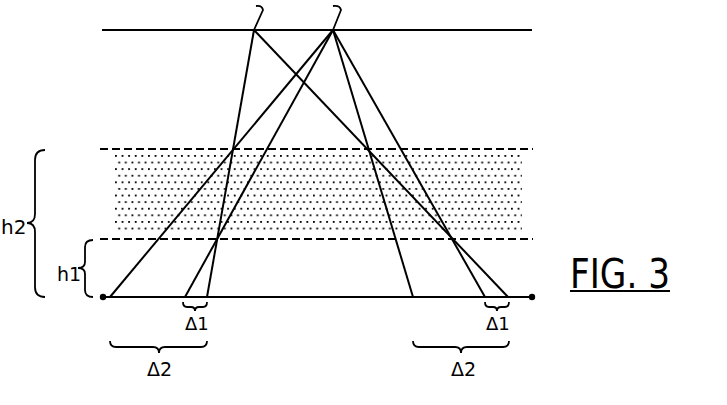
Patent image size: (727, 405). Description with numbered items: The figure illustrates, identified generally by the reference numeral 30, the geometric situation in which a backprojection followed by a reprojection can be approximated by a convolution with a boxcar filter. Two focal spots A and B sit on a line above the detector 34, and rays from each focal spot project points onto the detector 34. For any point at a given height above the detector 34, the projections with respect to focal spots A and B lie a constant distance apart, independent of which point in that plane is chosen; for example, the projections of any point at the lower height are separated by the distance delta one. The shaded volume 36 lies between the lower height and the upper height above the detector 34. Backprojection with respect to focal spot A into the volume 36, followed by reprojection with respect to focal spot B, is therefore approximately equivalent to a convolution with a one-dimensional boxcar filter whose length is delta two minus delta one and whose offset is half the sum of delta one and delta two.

The backprojection/reprojection geometry 30 is at (546, 82).
The detector 34 is at (331, 297).
The volume 36 is at (515, 186).